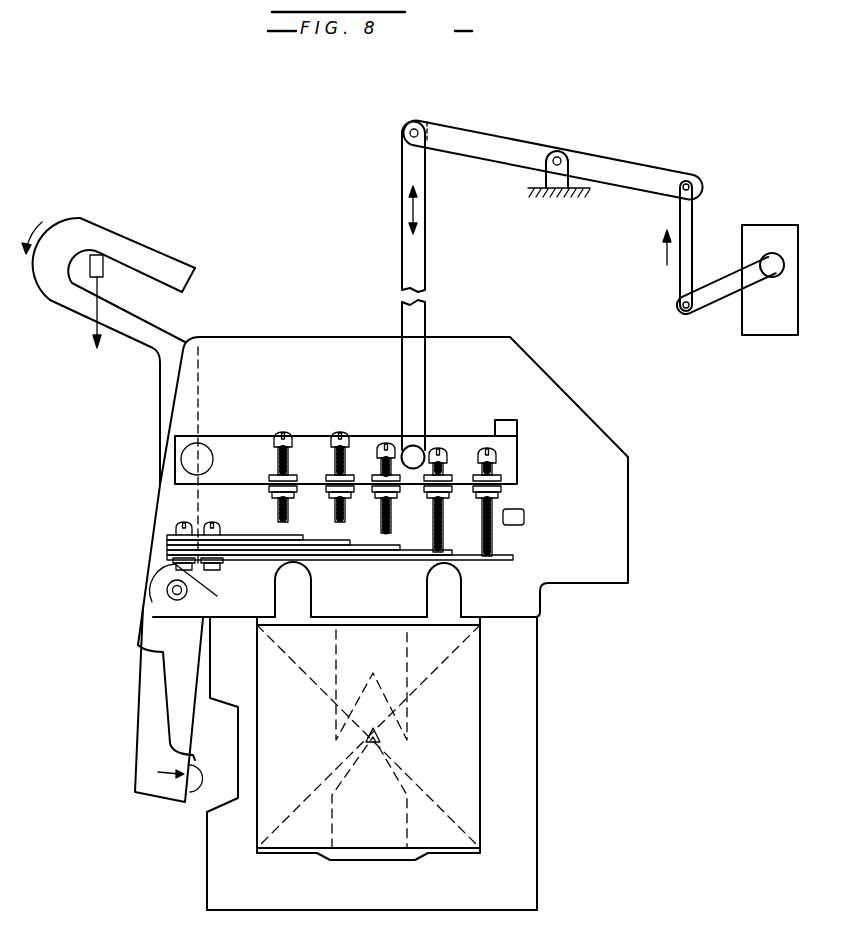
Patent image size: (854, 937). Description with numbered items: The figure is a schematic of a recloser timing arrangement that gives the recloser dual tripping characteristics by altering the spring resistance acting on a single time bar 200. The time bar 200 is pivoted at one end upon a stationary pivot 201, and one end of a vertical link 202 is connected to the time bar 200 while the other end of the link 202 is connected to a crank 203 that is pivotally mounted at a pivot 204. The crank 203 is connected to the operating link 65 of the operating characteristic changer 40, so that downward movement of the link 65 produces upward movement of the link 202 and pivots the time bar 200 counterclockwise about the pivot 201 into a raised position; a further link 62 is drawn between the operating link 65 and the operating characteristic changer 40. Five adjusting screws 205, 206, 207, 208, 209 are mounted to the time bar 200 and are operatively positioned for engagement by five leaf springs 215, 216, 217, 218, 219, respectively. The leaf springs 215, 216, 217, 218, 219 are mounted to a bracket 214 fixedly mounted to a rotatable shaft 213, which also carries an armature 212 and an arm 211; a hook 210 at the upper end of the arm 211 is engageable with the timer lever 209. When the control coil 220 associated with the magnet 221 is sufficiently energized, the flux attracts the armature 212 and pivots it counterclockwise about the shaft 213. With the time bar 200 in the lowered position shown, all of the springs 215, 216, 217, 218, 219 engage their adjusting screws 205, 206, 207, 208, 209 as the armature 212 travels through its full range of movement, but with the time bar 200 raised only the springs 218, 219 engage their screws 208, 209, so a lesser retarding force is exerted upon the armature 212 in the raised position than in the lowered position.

The operating characteristic changer 40 is at (765, 226).
The link 62 is at (712, 302).
The operating link 65 is at (712, 220).
The time bar 200 is at (247, 435).
The stationary pivot 201 is at (213, 459).
The vertical link 202 is at (410, 372).
The crank 203 is at (502, 144).
The pivot 204 is at (558, 157).
The adjusting screw 205 is at (290, 461).
The adjusting screw 206 is at (340, 431).
The adjusting screw 207 is at (388, 442).
The adjusting screw 208 is at (440, 449).
The adjusting screw 209 is at (105, 270).
The hook 210 is at (95, 232).
The arm 211 is at (158, 400).
The armature 212 is at (163, 697).
The rotatable shaft 213 is at (178, 602).
The bracket 214 is at (208, 578).
The leaf spring 215 is at (255, 521).
The leaf spring 216 is at (323, 542).
The leaf spring 217 is at (375, 540).
The leaf spring 218 is at (423, 540).
The leaf spring 219 is at (514, 558).
The control coil 220 is at (468, 733).
The magnet 221 is at (524, 798).